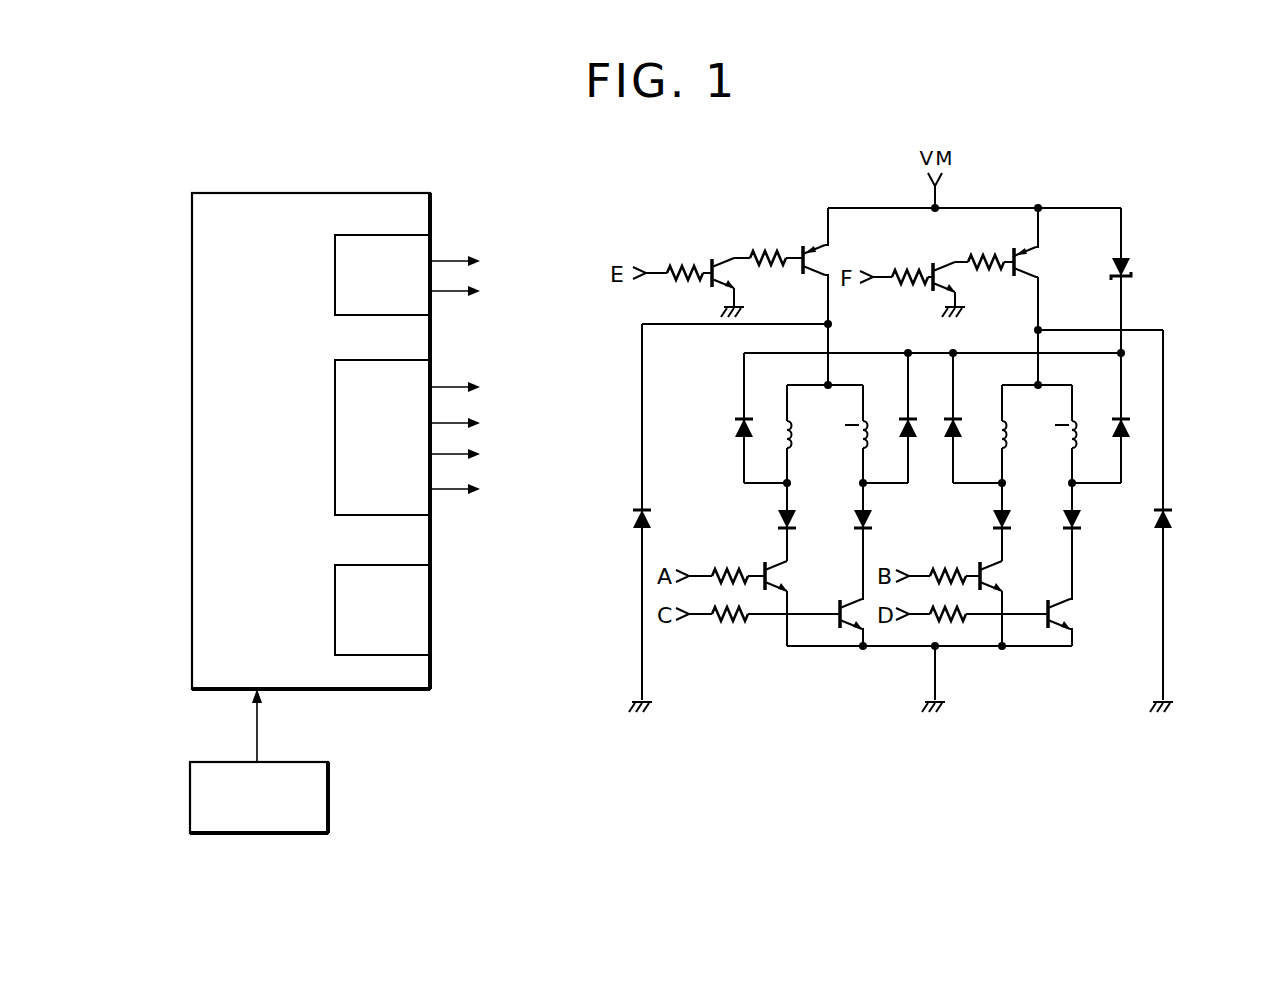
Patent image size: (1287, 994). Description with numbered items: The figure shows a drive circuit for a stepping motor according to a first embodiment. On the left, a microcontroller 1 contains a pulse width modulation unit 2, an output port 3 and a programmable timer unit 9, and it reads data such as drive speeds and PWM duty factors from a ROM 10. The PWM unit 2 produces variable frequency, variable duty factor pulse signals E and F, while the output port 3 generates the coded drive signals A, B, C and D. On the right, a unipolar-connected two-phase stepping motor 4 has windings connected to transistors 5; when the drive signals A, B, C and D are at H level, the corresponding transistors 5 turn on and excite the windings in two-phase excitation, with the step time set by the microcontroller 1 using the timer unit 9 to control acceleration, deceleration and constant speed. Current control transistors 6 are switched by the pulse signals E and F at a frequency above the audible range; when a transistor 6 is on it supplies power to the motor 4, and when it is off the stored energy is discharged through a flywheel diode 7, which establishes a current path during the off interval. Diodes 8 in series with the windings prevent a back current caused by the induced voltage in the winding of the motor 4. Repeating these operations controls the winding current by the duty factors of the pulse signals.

The microcontroller 1 is at (413, 193).
The pulse width modulation unit 2 is at (433, 247).
The output port 3 is at (433, 376).
The stepping motor 4 is at (850, 428).
The transistor 5 is at (843, 594).
The current control transistor 6 is at (816, 244).
The flywheel diode 7 is at (654, 520).
The diode 8 is at (848, 517).
The programmable timer unit 9 is at (432, 572).
The ROM 10 is at (330, 778).